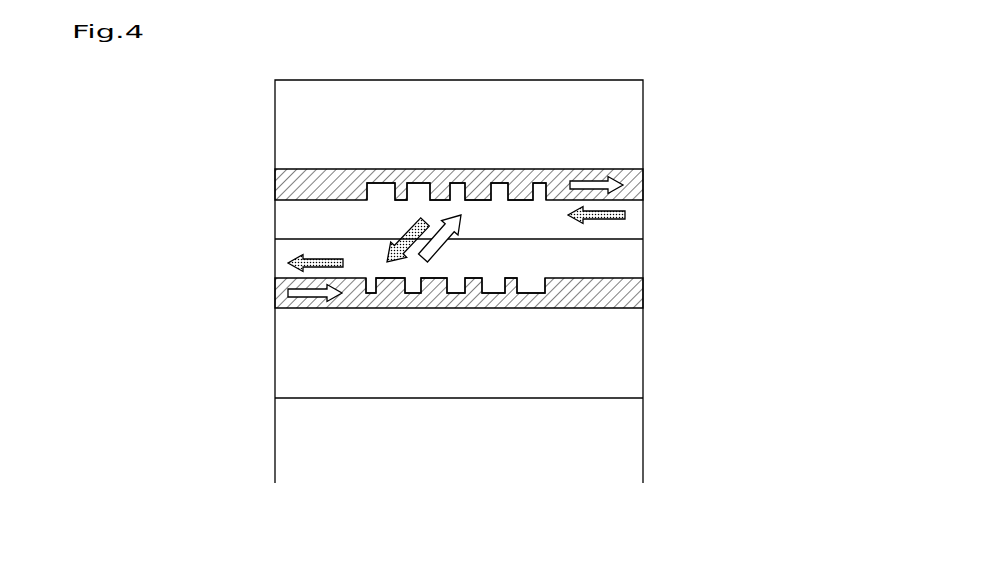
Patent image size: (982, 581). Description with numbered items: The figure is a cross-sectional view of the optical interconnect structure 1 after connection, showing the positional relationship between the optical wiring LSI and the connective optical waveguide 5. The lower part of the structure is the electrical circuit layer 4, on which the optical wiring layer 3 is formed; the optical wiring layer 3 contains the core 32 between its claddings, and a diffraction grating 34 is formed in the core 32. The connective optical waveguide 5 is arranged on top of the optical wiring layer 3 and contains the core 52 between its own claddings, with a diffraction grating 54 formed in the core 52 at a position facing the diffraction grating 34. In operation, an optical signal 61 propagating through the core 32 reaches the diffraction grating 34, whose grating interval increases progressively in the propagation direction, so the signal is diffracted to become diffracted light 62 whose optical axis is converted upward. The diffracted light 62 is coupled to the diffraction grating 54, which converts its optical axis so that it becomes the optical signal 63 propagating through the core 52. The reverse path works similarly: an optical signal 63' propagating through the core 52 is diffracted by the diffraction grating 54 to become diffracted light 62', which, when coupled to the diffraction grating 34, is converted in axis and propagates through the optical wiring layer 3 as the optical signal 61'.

The optical interconnect structure 1 is at (740, 522).
The optical wiring layer 3 is at (273, 246).
The electrical circuit layer 4 is at (273, 498).
The connective optical waveguide 5 is at (273, 83).
The core 32 is at (638, 293).
The diffraction grating 34 is at (555, 308).
The core 52 is at (638, 183).
The diffraction grating 54 is at (386, 180).
The optical signal 61 is at (379, 311).
The optical signal 61' is at (196, 240).
The diffracted light 62 is at (538, 241).
The diffracted light 62' is at (506, 180).
The optical signal 63 is at (544, 157).
The optical signal 63' is at (664, 212).